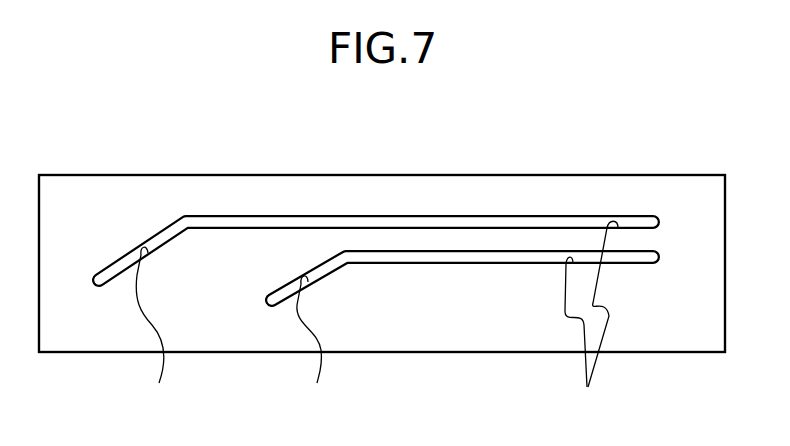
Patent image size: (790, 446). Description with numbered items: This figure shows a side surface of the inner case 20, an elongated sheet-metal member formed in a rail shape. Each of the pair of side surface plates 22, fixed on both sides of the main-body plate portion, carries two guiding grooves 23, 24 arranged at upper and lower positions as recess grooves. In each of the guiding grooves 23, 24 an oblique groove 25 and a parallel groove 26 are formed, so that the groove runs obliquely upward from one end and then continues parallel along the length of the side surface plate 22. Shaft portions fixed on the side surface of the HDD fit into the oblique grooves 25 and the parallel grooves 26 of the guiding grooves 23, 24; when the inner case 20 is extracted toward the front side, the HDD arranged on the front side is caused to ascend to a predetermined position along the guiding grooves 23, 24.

The inner case 20 is at (413, 175).
The side surface plate 22 is at (185, 175).
The guiding groove 23 is at (278, 215).
The guiding groove 24 is at (482, 264).
The oblique groove 25 is at (232, 331).
The parallel groove 26 is at (591, 318).